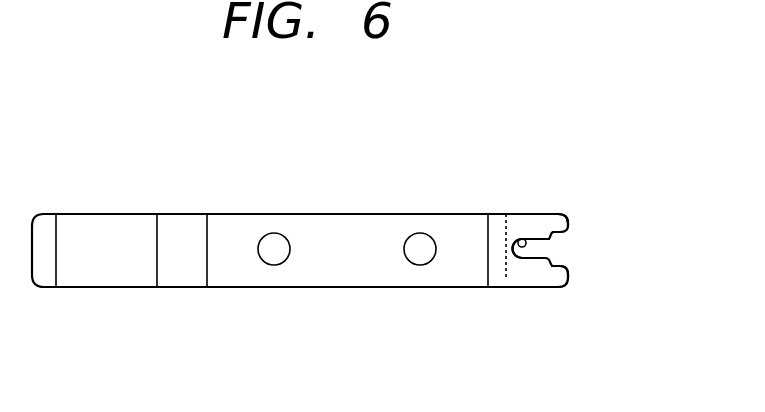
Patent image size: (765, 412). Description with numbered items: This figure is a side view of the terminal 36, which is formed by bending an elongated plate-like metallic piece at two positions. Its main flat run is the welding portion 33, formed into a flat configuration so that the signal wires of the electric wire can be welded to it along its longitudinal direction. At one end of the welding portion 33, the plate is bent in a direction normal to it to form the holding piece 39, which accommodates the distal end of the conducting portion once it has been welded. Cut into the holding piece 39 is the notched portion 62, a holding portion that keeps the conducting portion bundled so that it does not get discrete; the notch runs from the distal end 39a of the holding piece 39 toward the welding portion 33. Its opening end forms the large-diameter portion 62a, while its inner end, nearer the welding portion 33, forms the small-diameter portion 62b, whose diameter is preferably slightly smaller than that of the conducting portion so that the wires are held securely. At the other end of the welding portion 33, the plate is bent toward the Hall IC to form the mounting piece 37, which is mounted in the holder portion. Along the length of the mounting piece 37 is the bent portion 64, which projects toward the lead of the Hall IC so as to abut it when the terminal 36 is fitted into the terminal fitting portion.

The terminal 36 is at (497, 144).
The mounting piece 37 is at (308, 225).
The bent portion 64 is at (180, 272).
The holding piece 39 is at (548, 213).
The distal end of holding piece 39a is at (569, 221).
The notched portion 62 is at (567, 246).
The large-diameter portion 62a is at (569, 259).
The small-diameter portion 62b is at (524, 241).
The welding portion 33 is at (506, 278).